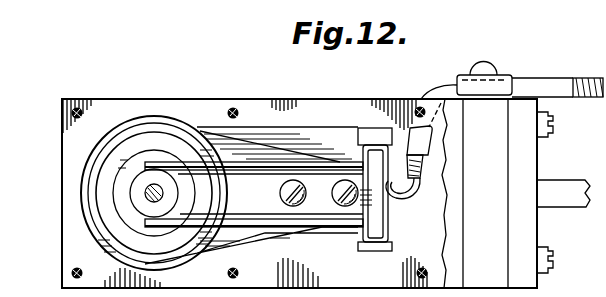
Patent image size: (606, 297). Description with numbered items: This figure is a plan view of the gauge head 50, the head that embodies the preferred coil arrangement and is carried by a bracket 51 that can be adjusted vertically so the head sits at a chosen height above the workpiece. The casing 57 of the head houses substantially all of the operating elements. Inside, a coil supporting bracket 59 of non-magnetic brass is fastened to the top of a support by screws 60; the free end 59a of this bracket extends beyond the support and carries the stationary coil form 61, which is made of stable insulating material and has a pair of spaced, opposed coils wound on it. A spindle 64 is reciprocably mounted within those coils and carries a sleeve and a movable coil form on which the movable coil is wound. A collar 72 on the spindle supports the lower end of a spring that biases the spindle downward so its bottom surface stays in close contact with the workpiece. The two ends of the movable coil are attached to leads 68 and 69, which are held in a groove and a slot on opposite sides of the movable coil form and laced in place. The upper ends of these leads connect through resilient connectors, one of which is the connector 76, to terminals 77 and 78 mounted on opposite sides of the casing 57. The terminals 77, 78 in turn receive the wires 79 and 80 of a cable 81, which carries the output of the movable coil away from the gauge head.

The gauge head 50 is at (192, 97).
The bracket 51 is at (575, 184).
The casing 57 is at (345, 100).
The coil supporting bracket 59 is at (250, 147).
The free end of bracket 59a is at (90, 167).
The screws 60 is at (302, 191).
The stationary coil form 61 is at (117, 227).
The spindle 64 is at (160, 197).
The lead 68 is at (147, 172).
The lead 69 is at (143, 215).
The collar 72 is at (133, 191).
The resilient connector 76 is at (265, 225).
The terminal 77 is at (361, 155).
The terminal 78 is at (358, 235).
The wire 79 is at (413, 176).
The wire 80 is at (395, 199).
The cable 81 is at (548, 80).